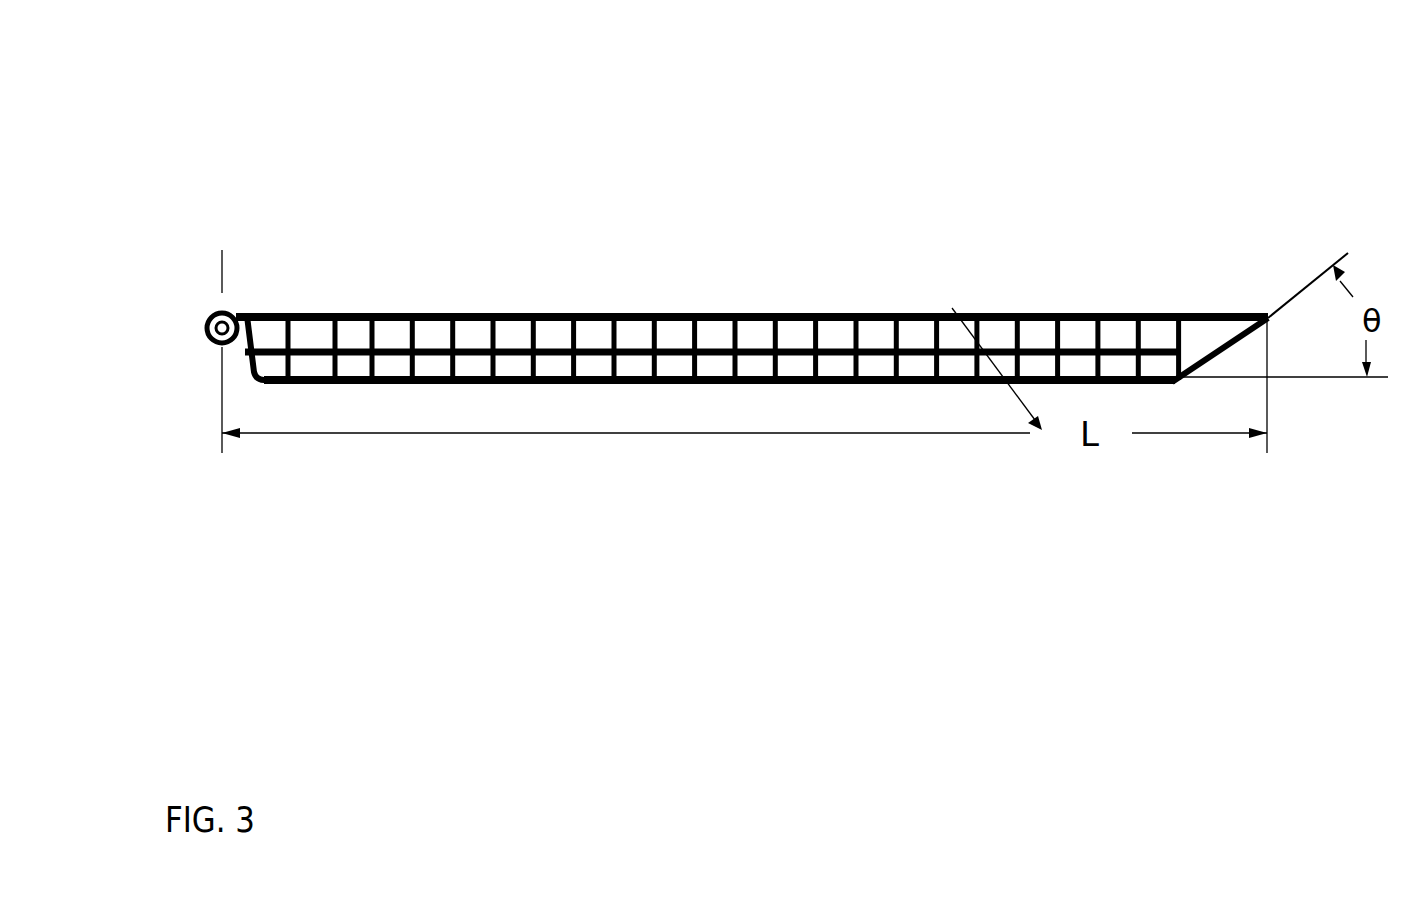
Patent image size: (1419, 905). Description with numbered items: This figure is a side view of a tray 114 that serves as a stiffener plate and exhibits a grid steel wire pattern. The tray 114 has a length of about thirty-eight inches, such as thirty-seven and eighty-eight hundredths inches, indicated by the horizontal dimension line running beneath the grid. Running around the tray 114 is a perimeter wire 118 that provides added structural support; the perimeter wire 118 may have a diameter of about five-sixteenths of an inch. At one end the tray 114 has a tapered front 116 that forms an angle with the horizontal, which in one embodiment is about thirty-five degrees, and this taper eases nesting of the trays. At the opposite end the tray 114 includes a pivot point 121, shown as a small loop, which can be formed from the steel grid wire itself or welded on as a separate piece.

The tray 114 is at (746, 221).
The tapered front 116 is at (1257, 286).
The perimeter wire 118 is at (830, 296).
The pivot point 121 is at (204, 306).